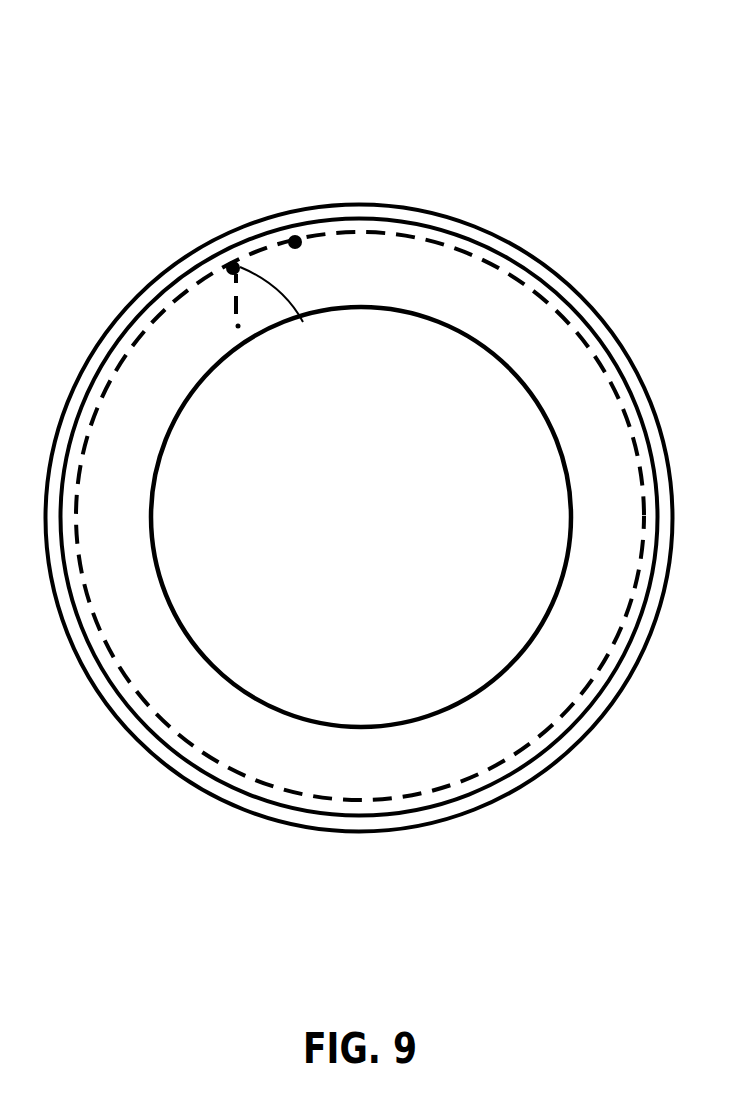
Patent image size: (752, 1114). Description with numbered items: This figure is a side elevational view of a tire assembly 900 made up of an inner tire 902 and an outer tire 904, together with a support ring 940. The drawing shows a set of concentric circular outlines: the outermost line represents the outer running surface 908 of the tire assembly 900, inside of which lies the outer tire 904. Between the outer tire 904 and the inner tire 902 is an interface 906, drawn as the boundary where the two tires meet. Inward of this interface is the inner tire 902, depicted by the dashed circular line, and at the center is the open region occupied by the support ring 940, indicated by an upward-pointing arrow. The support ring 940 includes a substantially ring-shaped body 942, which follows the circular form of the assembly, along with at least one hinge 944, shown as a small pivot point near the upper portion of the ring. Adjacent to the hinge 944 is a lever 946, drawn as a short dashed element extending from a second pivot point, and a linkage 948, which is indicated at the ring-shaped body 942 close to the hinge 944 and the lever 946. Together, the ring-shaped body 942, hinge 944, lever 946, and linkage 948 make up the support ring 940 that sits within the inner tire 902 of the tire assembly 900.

The tire assembly 900 is at (622, 96).
The inner tire 902 is at (195, 743).
The outer tire 904 is at (341, 206).
The interface 906 is at (458, 232).
The outer running surface 908 is at (588, 300).
The support ring 940 is at (387, 386).
The substantially ring-shaped body 942 is at (482, 262).
The hinge 944 is at (296, 249).
The lever 946 is at (233, 317).
The linkage 948 is at (250, 252).